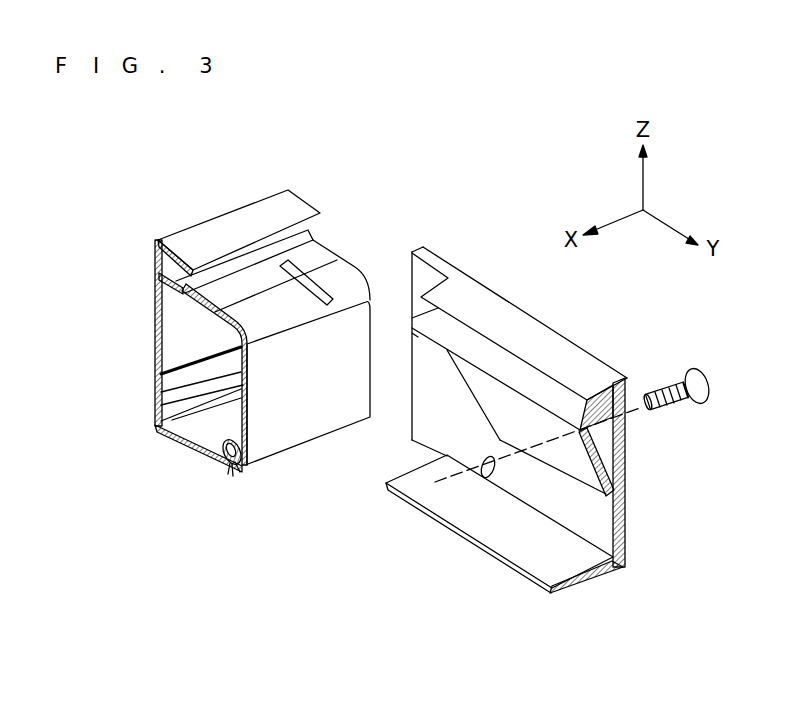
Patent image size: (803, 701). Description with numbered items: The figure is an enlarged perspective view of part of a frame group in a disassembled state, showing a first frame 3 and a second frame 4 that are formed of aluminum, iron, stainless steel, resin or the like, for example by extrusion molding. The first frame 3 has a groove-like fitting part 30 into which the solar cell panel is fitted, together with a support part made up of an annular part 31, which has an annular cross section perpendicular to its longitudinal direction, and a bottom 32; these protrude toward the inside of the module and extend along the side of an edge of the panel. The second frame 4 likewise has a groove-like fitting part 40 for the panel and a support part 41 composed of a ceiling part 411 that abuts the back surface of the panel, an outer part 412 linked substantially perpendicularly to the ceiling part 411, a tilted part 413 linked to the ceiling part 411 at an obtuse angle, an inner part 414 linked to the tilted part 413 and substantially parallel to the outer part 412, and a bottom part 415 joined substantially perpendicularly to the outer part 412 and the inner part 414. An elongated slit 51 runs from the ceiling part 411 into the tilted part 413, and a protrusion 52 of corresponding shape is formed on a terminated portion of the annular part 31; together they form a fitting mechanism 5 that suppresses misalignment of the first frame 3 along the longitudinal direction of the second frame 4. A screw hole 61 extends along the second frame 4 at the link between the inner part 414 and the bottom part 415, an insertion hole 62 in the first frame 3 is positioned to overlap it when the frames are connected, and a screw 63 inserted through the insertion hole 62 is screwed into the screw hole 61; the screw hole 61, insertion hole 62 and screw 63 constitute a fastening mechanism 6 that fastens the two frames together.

The first frame 3 is at (533, 317).
The fitting part 30 is at (550, 484).
The annular part 31 is at (580, 472).
The bottom 32 is at (387, 482).
The second frame 4 is at (237, 209).
The fitting part 40 is at (157, 263).
The support part 41 is at (84, 302).
The ceiling part 411 is at (185, 283).
The outer part 412 is at (162, 337).
The tilted part 413 is at (240, 336).
The inner part 414 is at (161, 400).
The bottom part 415 is at (157, 435).
The fitting mechanism 5 is at (345, 205).
The slit 51 is at (296, 265).
The protrusion 52 is at (413, 332).
The fastening mechanism 6 is at (310, 622).
The screw hole 61 is at (232, 470).
The insertion hole 62 is at (487, 474).
The screw 63 is at (710, 407).